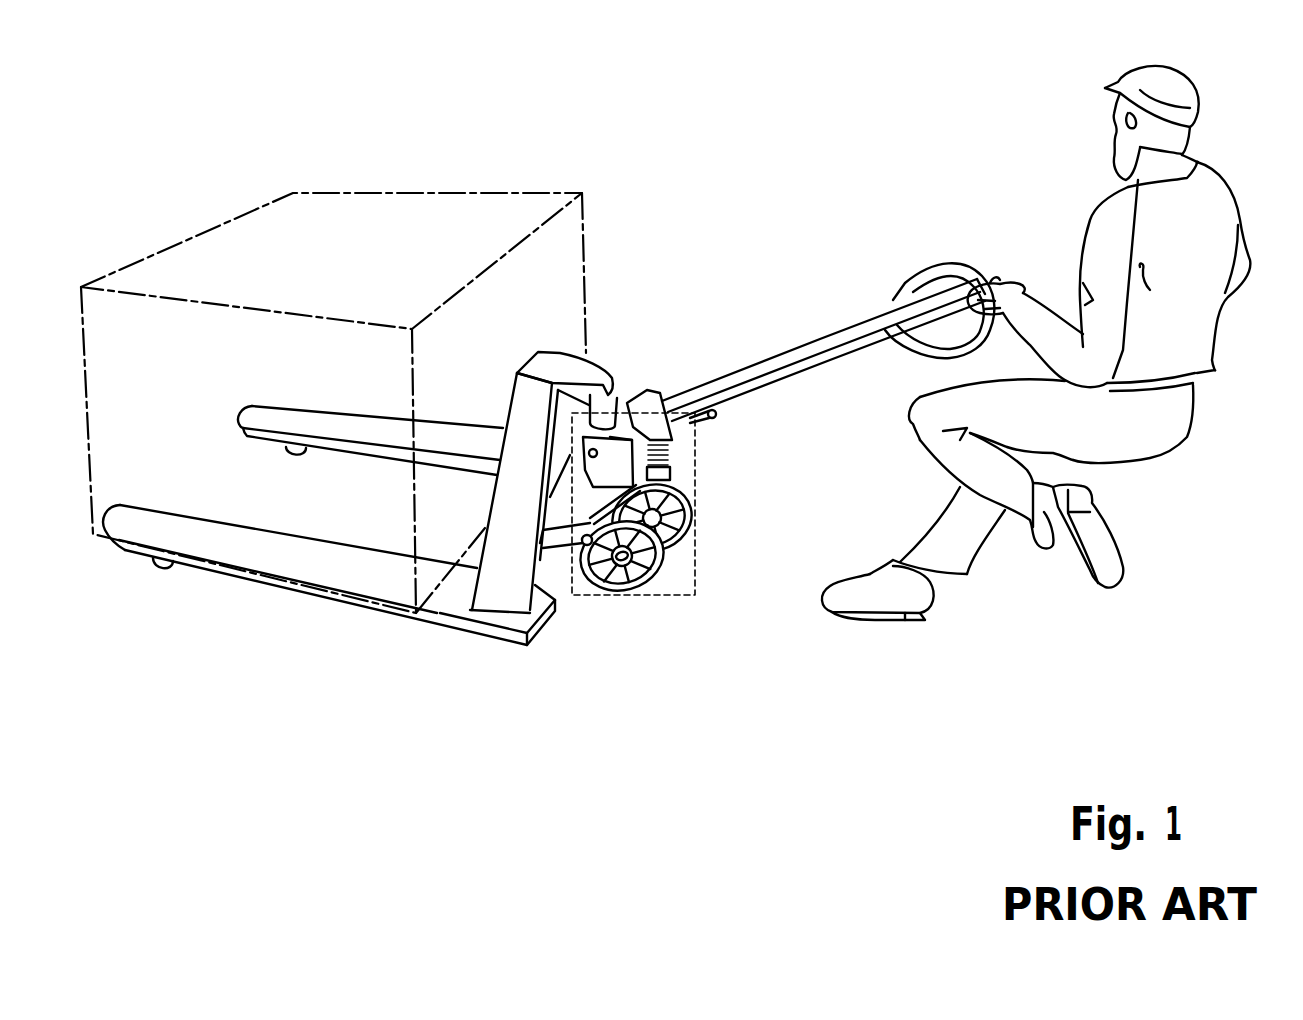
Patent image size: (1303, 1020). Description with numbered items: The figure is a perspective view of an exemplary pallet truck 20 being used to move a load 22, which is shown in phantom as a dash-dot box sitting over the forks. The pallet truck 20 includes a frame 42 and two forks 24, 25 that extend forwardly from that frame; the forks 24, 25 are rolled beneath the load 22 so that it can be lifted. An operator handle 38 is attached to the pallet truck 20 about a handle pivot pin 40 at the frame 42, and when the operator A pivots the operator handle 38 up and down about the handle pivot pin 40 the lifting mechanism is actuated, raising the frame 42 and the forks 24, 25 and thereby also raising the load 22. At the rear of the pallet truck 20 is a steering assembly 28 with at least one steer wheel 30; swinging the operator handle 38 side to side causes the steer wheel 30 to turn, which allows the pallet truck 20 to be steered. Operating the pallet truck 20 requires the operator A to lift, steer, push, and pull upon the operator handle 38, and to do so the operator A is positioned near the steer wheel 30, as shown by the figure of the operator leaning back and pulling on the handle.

The pallet truck 20 is at (548, 482).
The load 22 is at (325, 193).
The fork 24 is at (177, 528).
The fork 25 is at (272, 413).
The steering assembly 28 is at (652, 595).
The steer wheel 30 is at (682, 459).
The operator handle 38 is at (792, 352).
The handle pivot pin 40 is at (625, 400).
The frame 42 is at (552, 363).
The operator A is at (1103, 240).